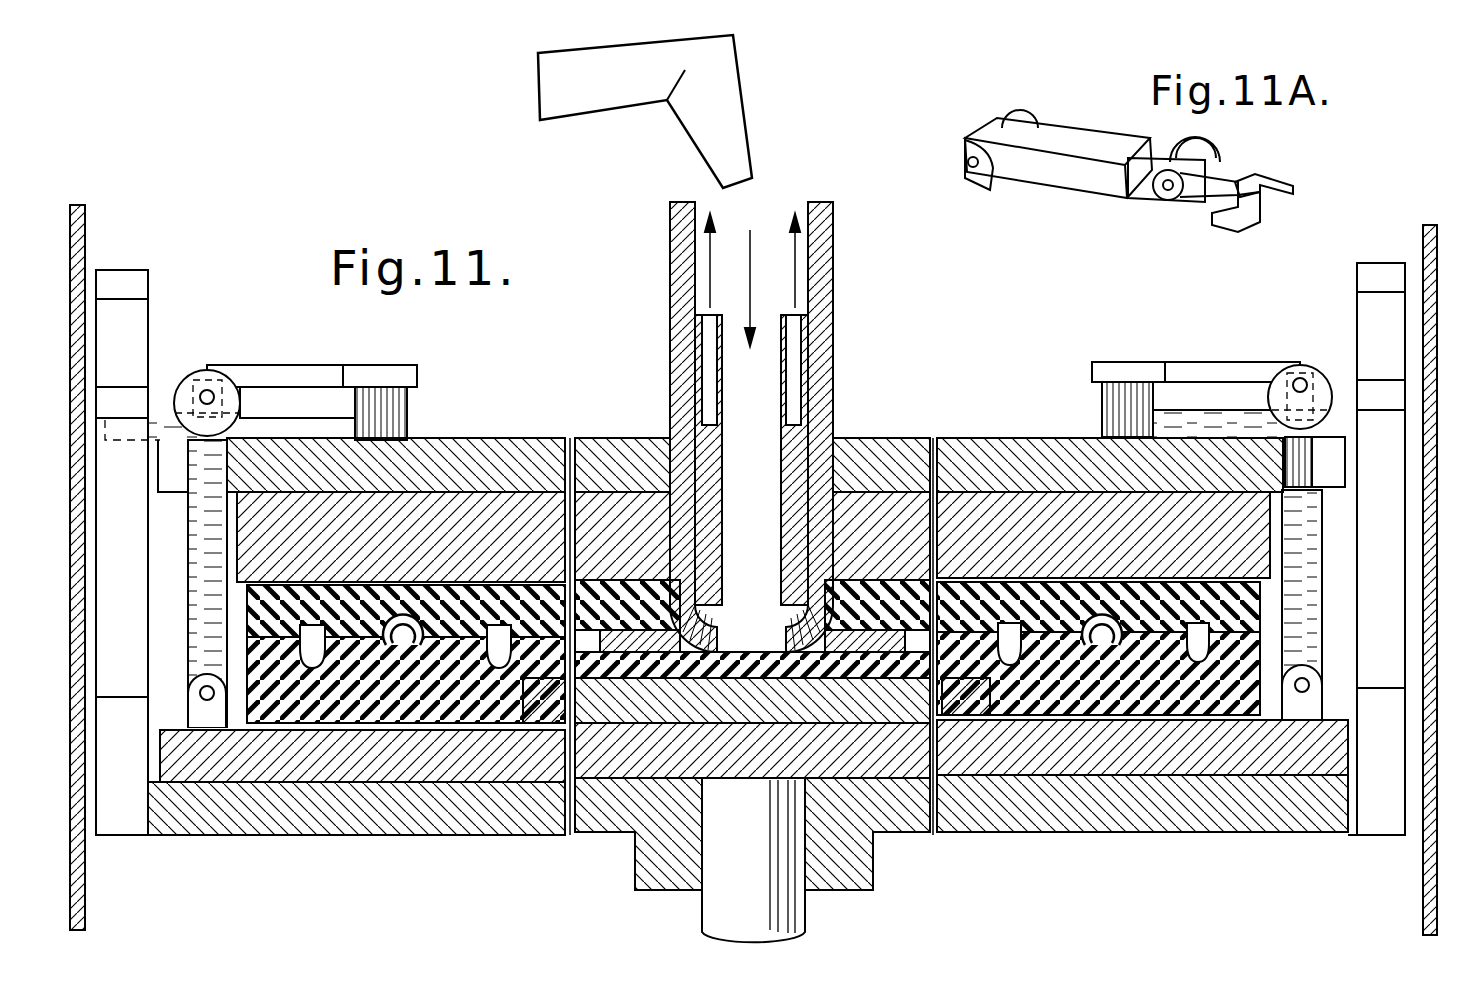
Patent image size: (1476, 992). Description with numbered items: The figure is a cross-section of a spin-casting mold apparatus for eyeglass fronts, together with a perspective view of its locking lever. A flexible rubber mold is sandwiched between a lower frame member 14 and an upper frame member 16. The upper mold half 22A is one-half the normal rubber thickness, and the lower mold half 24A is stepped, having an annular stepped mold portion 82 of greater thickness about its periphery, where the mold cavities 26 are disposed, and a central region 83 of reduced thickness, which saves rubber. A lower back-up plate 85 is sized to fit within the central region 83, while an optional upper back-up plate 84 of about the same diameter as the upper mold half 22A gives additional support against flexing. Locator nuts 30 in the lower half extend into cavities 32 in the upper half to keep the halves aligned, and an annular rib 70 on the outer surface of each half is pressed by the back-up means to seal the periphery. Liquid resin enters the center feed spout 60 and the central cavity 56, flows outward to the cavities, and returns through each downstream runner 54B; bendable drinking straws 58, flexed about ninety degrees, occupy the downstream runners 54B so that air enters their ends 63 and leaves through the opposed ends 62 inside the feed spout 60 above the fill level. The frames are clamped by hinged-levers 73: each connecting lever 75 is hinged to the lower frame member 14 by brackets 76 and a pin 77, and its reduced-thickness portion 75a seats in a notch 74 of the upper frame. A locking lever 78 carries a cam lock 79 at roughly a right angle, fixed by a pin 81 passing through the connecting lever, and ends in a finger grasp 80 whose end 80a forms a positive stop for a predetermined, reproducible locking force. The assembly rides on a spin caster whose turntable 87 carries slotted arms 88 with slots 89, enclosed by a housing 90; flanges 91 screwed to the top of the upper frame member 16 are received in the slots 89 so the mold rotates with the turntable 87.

In FIG. 11, the lower frame member 14 is at (253, 772).
In FIG. 11, the upper frame member 16 is at (445, 458).
In FIG. 11, the upper mold half 22A is at (500, 590).
In FIG. 11, the lower mold half 24A is at (312, 710).
In FIG. 11, the mold cavities 26 is at (328, 640).
In FIG. 11, the locator nuts 30 is at (1108, 626).
In FIG. 11, the locator cavities 32 is at (1098, 648).
In FIG. 11, the downstream runner 54B is at (640, 683).
In FIG. 11, the central cavity 56 is at (765, 638).
In FIG. 11, the drinking straws 58 is at (785, 572).
In FIG. 11, the center feed spout 60 is at (830, 332).
In FIG. 11, the straw ends 62 is at (783, 462).
In FIG. 11, the straw ends 63 is at (625, 648).
In FIG. 11, the annular rib 70 is at (283, 578).
In FIG. 11, the hinged-lever 73 is at (1185, 352).
In FIG. 11A, the hinged-lever 73 is at (1086, 122).
In FIG. 11, the notch 74 is at (1290, 460).
In FIG. 11, the connecting lever 75 is at (1312, 590).
In FIG. 11A, the connecting lever 75 is at (1062, 175).
In FIG. 11, the reduced-thickness portion 75a is at (1310, 470).
In FIG. 11A, the reduced-thickness portion 75a is at (1138, 180).
In FIG. 11, the brackets 76 is at (1322, 676).
In FIG. 11A, the brackets 76 is at (962, 152).
In FIG. 11, the pin 77 is at (1300, 700).
In FIG. 11A, the pin 77 is at (970, 170).
In FIG. 11, the locking lever 78 is at (1240, 368).
In FIG. 11A, the locking lever 78 is at (1205, 196).
In FIG. 11, the cam lock 79 is at (1270, 418).
In FIG. 11A, the cam lock 79 is at (1210, 136).
In FIG. 11, the finger grasp 80 is at (1123, 372).
In FIG. 11A, the finger grasp 80 is at (1280, 204).
In FIG. 11, the finger grasp end 80a is at (1100, 395).
In FIG. 11A, the finger grasp end 80a is at (1258, 183).
In FIG. 11, the pin 81 is at (1305, 378).
In FIG. 11A, the pin 81 is at (1160, 201).
In FIG. 11, the annular stepped mold portion 82 is at (410, 715).
In FIG. 11, the central region 83 is at (640, 700).
In FIG. 11, the upper back-up plate 84 is at (390, 512).
In FIG. 11, the lower back-up plate 85 is at (672, 722).
In FIG. 11, the turntable 87 is at (1030, 826).
In FIG. 11, the slotted arms 88 is at (138, 266).
In FIG. 11, the slots 89 is at (132, 320).
In FIG. 11, the housing 90 is at (80, 548).
In FIG. 11, the flanges 91 is at (300, 418).